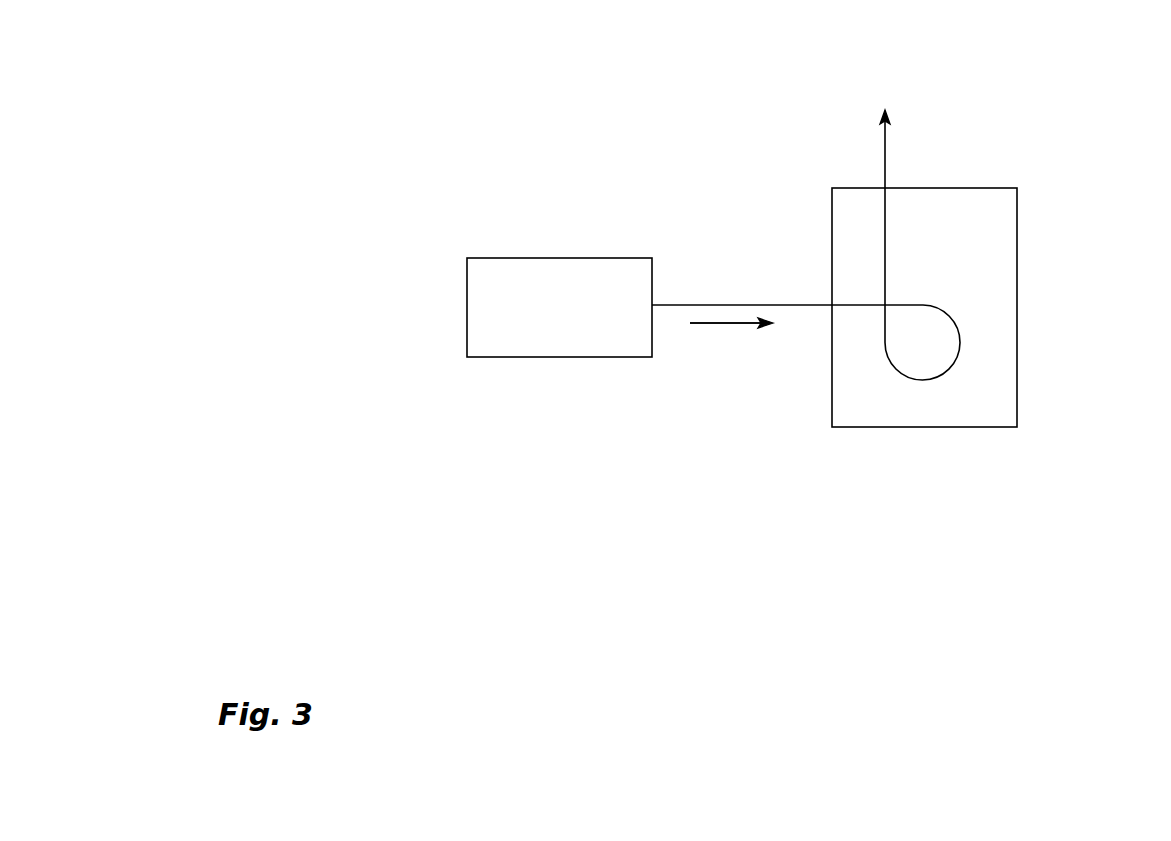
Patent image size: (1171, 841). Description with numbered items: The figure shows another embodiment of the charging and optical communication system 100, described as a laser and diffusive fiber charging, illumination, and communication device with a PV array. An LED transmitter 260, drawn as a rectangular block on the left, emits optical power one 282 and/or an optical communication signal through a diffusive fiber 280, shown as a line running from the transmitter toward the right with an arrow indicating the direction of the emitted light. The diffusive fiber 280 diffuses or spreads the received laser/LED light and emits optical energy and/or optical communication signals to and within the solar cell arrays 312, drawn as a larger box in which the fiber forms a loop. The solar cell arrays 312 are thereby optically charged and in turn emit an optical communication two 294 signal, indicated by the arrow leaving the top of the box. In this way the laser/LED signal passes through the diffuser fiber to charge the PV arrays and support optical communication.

The charging and optical communication system 100 is at (420, 76).
The LED transmitter 260 is at (557, 258).
The diffusive fiber 280 is at (782, 305).
The power one 282 is at (723, 323).
The optical communication two 294 is at (885, 137).
The solar cell arrays 312 is at (1017, 308).